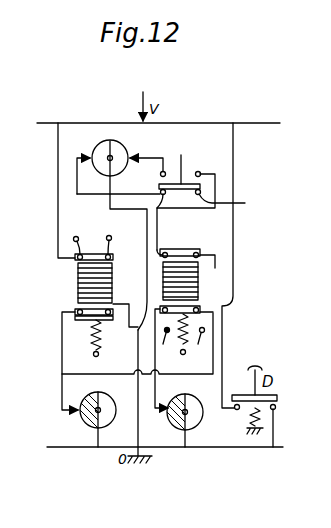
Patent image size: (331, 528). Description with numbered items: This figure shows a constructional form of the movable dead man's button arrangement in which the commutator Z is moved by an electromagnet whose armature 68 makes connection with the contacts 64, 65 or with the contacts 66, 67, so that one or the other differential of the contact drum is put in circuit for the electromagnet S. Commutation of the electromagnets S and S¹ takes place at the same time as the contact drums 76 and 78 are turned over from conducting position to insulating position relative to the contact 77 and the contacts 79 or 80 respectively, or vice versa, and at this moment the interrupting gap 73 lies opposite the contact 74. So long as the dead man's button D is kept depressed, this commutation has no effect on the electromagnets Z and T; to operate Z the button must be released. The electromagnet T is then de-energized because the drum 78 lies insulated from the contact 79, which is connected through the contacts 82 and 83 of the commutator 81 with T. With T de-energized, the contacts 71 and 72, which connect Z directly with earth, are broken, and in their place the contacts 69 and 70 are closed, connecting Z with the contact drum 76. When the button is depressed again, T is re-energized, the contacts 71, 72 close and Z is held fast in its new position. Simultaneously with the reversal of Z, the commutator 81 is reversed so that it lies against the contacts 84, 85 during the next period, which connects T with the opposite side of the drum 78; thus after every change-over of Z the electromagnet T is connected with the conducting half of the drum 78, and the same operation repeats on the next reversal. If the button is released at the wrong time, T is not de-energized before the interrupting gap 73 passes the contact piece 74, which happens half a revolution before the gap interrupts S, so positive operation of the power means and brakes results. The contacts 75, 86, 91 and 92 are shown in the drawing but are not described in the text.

The contact 64 is at (72, 259).
The contact 65 is at (114, 258).
The contact 66 is at (76, 236).
The contact 67 is at (111, 237).
The armature 68 is at (107, 236).
The contact 69 is at (163, 344).
The contact 70 is at (200, 344).
The contact 71 is at (147, 303).
The contact 72 is at (213, 313).
The interrupting gap 73 is at (205, 400).
The contact 74 is at (172, 420).
The contact 75 is at (213, 322).
The contact drum 76 is at (106, 423).
The contact 77 is at (76, 415).
The contact drum 78 is at (96, 147).
The contact 79 is at (88, 178).
The contact 80 is at (129, 156).
The commutator 81 is at (179, 163).
The contact 82 is at (160, 196).
The contact 83 is at (230, 201).
The contact 84 is at (160, 173).
The contact 85 is at (199, 171).
The meter 100 86 is at (199, 426).
The upper left contact of relay T 91 is at (166, 251).
The upper right contact of relay T 92 is at (197, 251).